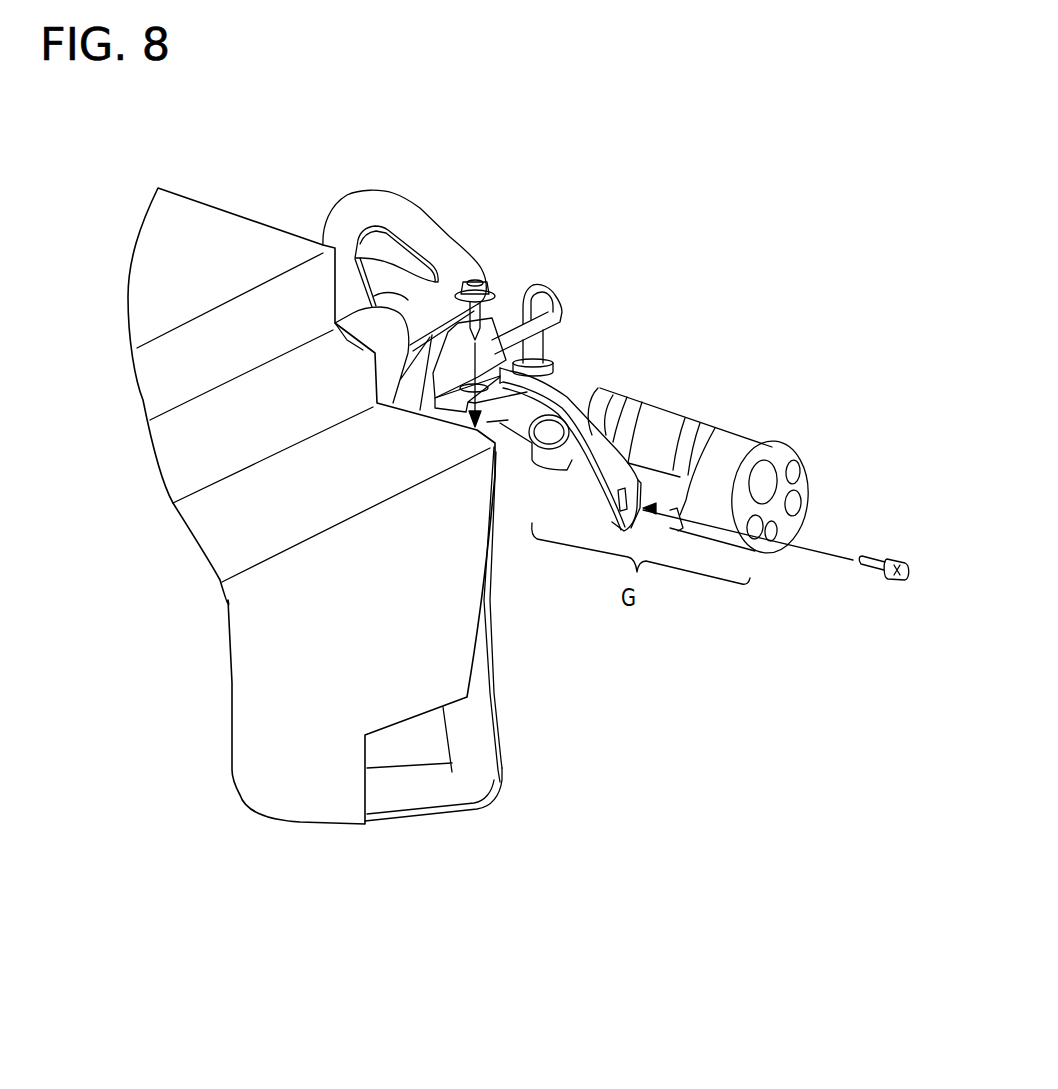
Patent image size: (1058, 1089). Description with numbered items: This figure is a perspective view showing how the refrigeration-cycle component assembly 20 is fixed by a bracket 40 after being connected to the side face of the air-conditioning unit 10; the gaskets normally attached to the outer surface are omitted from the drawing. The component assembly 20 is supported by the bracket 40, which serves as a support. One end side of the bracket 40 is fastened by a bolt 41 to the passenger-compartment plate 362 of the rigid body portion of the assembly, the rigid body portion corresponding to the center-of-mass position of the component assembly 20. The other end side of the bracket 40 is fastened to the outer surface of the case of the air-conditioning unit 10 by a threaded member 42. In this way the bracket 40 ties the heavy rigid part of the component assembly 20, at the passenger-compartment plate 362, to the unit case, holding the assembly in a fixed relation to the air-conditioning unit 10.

The air-conditioning unit 10 is at (232, 220).
The refrigeration-cycle component assembly 20 is at (588, 318).
The bracket 40 is at (593, 380).
The bolt 41 is at (877, 560).
The threaded member 42 is at (483, 283).
The passenger-compartment plate 362 is at (633, 402).